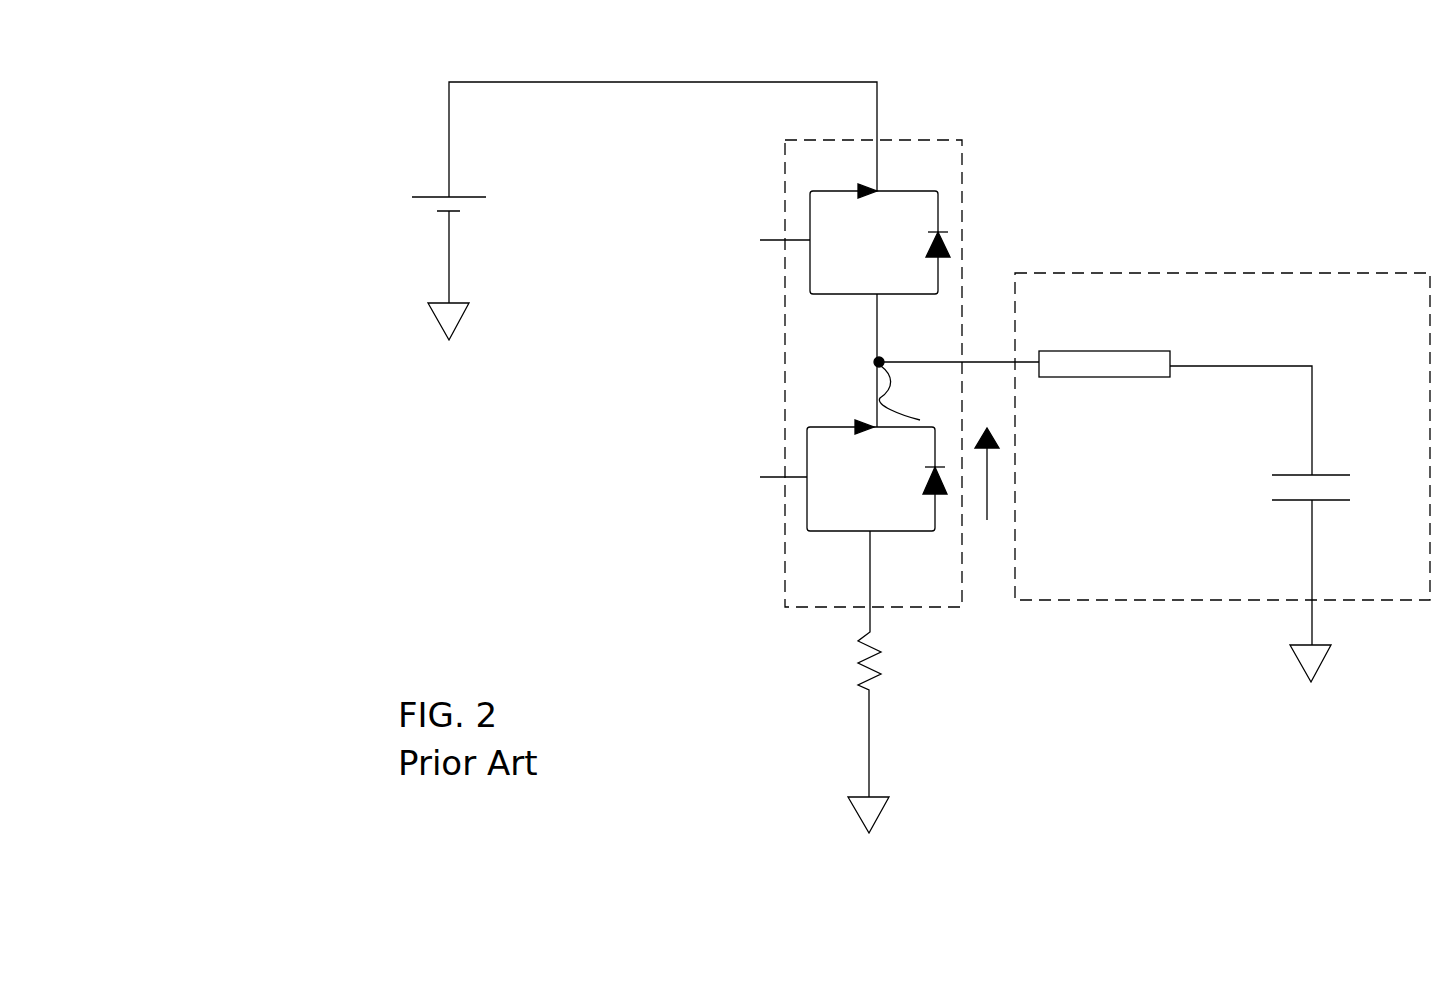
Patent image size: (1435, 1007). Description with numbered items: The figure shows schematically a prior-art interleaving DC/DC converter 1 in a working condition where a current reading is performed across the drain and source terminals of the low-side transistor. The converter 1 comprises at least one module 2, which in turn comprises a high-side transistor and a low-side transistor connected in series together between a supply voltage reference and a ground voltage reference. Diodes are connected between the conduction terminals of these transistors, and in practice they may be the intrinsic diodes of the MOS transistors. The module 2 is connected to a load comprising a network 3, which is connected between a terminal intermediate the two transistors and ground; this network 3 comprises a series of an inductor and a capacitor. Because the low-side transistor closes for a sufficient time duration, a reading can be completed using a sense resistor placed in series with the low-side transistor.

The interleaving DC/DC converter 1 is at (250, 295).
The module 2 is at (927, 165).
The network 3 is at (1125, 563).